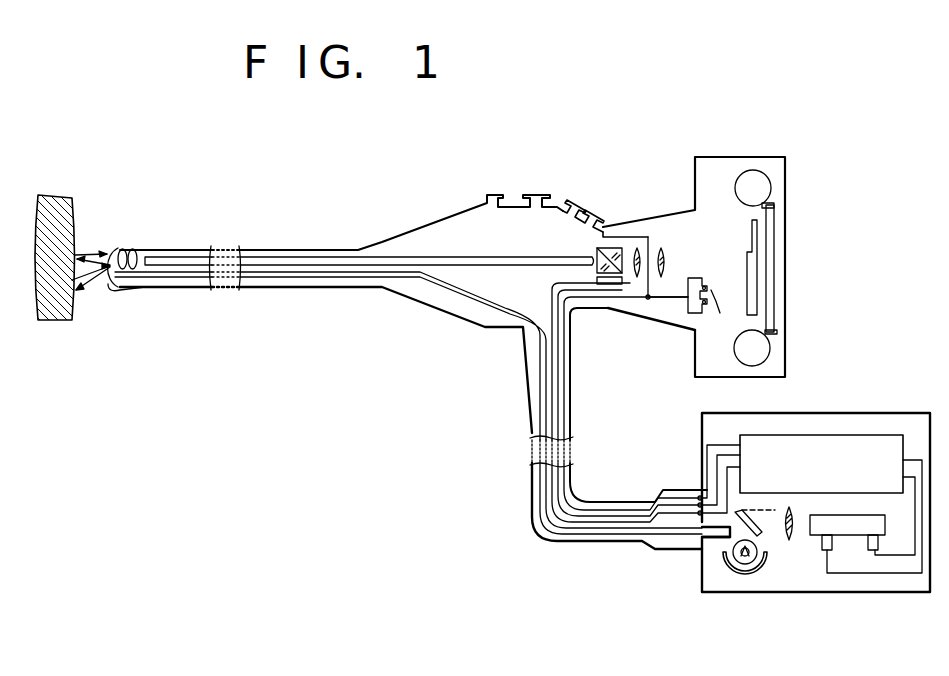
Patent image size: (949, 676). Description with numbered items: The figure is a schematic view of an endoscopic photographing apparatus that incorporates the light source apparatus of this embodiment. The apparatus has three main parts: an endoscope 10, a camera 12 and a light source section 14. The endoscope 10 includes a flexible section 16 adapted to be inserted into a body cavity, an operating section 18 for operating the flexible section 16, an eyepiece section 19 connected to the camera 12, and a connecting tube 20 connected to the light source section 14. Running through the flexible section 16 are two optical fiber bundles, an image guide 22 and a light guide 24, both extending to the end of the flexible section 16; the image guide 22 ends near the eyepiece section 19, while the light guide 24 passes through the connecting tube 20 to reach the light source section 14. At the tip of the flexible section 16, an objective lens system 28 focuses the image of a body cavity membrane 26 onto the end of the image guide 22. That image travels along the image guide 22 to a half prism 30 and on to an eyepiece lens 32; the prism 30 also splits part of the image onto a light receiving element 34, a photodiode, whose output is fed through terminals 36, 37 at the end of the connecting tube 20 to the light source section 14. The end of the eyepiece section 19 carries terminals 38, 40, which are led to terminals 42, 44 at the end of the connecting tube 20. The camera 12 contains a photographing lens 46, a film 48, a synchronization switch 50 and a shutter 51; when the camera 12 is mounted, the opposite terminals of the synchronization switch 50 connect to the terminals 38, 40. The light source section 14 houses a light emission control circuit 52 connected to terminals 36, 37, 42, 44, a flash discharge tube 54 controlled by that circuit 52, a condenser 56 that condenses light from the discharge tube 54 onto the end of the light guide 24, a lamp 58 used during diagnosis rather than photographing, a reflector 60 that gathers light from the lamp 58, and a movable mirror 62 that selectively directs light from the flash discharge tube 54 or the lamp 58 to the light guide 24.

The endoscope 10 is at (432, 221).
The camera 12 is at (720, 158).
The light source section 14 is at (828, 413).
The flexible section 16 is at (250, 252).
The operating section 18 is at (443, 311).
The eyepiece section 19 is at (621, 236).
The connecting tube 20 is at (532, 433).
The image guide 22 is at (498, 257).
The light guide 24 is at (506, 308).
The body cavity membrane 26 is at (73, 218).
The objective lens system 28 is at (131, 249).
The half prism 30 is at (597, 251).
The eyepiece lens 32 is at (642, 252).
The light receiving element 34 is at (597, 277).
The terminal 36 is at (702, 530).
The terminal 37 is at (702, 537).
The terminal 38 is at (647, 297).
The terminal 40 is at (649, 300).
The terminal 42 is at (699, 498).
The terminal 44 is at (699, 506).
The photographing lens 46 is at (667, 255).
The film 48 is at (786, 297).
The synchronization switch 50 is at (713, 301).
The shutter 51 is at (746, 235).
The light emission control circuit 52 is at (883, 445).
The flash discharge tube 54 is at (848, 527).
The condenser 56 is at (793, 541).
The lamp 58 is at (725, 549).
The reflector 60 is at (748, 575).
The movable mirror 62 is at (762, 532).